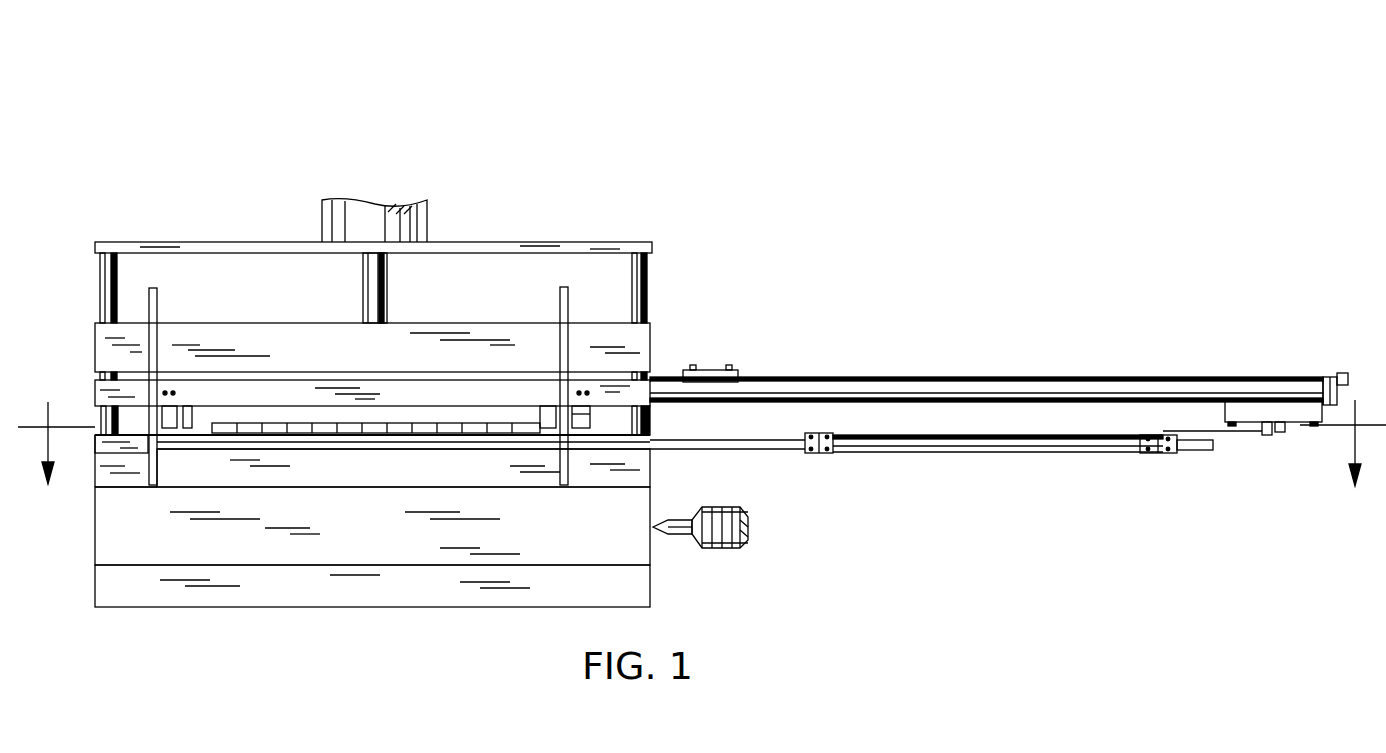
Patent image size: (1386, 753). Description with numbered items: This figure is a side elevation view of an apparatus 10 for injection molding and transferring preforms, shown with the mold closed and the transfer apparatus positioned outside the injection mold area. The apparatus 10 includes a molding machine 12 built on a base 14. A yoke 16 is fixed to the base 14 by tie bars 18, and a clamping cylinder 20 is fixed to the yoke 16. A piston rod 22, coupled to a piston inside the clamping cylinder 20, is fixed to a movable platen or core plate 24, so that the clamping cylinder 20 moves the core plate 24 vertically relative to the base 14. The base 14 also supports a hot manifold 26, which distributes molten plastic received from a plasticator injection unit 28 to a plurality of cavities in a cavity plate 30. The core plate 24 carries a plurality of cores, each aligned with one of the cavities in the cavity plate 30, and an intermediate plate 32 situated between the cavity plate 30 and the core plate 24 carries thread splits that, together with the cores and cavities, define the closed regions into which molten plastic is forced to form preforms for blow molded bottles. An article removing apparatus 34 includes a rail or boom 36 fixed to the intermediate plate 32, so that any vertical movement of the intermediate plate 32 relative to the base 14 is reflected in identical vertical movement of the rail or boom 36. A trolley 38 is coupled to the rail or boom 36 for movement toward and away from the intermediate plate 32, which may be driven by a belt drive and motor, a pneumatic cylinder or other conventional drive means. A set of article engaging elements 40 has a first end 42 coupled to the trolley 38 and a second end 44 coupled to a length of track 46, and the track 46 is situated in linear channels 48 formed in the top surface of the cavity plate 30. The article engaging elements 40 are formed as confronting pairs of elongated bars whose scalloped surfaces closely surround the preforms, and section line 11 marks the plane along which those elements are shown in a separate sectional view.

The apparatus 10 is at (767, 140).
The section line 11- 11 is at (701, 443).
The molding machine 12 is at (828, 619).
The base 14 is at (137, 594).
The yoke 16 is at (178, 247).
The tie bars 18 is at (116, 280).
The clamping cylinder 20 is at (427, 230).
The piston rod 22 is at (372, 275).
The movable platen or core plate 24 is at (243, 337).
The hot manifold 26 is at (126, 535).
The plasticator injection unit 28 is at (708, 550).
The cavity plate 30 is at (122, 478).
The intermediate plate 32 is at (100, 393).
The article removing apparatus 34 is at (1007, 279).
The rail or boom 36 is at (978, 385).
The trolley 38 is at (1240, 415).
The article engaging elements 40 is at (1001, 445).
The first end 42 is at (1165, 455).
The second end 44 is at (822, 455).
The track 46 is at (714, 446).
The linear channels 48 is at (100, 447).